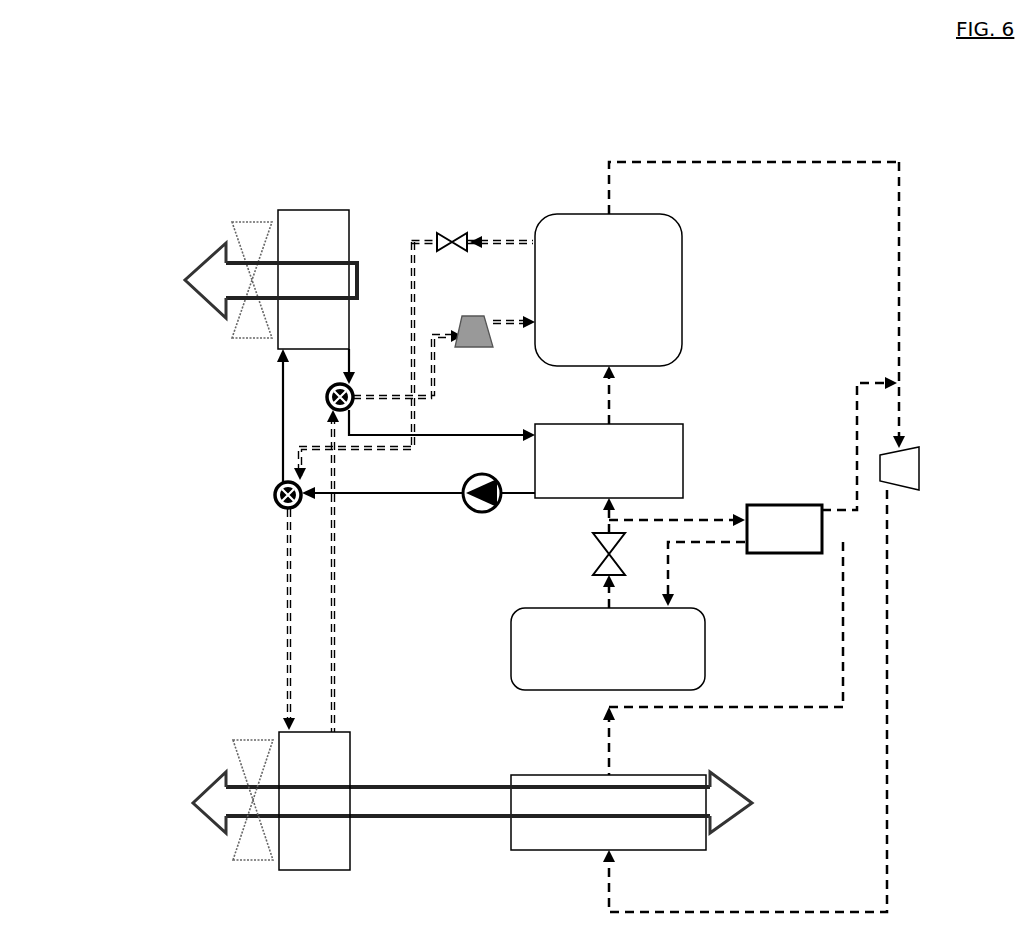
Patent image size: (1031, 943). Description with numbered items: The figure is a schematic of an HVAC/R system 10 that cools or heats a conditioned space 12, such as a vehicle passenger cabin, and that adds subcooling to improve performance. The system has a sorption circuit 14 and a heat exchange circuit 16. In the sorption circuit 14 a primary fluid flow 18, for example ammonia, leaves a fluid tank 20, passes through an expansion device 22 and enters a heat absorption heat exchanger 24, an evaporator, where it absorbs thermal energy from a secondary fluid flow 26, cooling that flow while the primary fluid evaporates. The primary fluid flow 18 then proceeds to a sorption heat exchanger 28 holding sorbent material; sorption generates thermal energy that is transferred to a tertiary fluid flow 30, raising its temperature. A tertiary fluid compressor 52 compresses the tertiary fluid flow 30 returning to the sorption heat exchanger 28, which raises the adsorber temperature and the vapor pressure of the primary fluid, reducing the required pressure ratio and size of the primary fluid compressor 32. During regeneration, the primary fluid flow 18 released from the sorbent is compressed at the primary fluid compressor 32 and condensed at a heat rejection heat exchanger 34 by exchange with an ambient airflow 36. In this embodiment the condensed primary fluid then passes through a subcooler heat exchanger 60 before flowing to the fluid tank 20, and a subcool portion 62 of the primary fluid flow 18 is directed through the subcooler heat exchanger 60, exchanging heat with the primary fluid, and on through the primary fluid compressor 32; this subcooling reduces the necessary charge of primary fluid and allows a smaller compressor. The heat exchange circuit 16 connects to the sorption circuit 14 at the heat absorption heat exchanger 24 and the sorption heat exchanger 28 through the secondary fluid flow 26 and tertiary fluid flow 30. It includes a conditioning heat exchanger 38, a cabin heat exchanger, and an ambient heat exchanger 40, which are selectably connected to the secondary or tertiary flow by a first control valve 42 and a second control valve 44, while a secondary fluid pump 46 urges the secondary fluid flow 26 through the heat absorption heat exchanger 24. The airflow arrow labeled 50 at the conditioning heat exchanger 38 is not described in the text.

The HVAC/R system 10 is at (128, 198).
The conditioned space 12 is at (113, 290).
The sorption circuit 14 is at (566, 176).
The heat exchange circuit 16 is at (318, 178).
The primary fluid flow 18 is at (908, 262).
The fluid tank 20 is at (608, 649).
The expansion device 22 is at (594, 563).
The heat absorption heat exchanger 24 is at (609, 461).
The secondary fluid flow 26 is at (520, 436).
The sorption heat exchanger 28 is at (608, 290).
The tertiary fluid flow 30 is at (520, 240).
The primary fluid compressor 32 is at (919, 452).
The heat rejection heat exchanger 34 is at (530, 840).
The ambient airflow 36 is at (420, 780).
The conditioning heat exchanger 38 is at (291, 279).
The ambient heat exchanger 40 is at (291, 801).
The first control valve 42 is at (276, 488).
The second control valve 44 is at (326, 397).
The secondary fluid pump 46 is at (468, 480).
The air flow arrow 50 is at (210, 283).
The tertiary fluid compressor 52 is at (476, 315).
The subcooler heat exchanger 60 is at (757, 503).
The subcool portion 62 is at (718, 518).